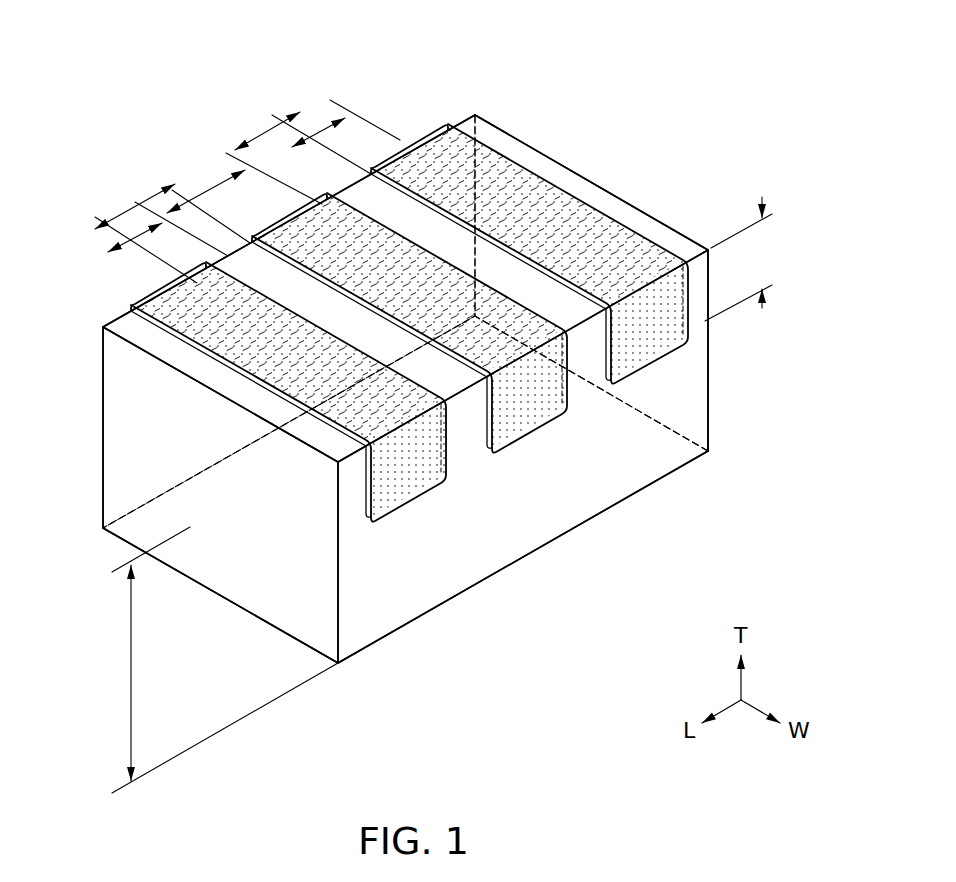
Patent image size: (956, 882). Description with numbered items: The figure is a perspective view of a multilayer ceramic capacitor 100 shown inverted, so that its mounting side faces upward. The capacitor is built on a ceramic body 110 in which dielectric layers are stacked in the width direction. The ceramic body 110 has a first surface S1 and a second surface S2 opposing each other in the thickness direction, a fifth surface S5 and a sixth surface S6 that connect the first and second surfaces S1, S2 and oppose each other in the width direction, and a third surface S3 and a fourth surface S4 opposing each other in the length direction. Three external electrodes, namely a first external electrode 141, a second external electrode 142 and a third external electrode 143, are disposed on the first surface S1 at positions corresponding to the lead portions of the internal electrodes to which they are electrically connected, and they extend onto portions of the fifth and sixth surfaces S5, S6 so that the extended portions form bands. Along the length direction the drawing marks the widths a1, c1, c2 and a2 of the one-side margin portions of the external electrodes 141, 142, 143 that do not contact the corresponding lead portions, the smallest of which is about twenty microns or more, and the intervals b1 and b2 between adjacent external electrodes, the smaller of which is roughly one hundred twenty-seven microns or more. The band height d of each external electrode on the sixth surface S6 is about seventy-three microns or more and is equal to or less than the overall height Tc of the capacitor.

The multilayer ceramic capacitor 100 is at (212, 56).
The ceramic body 110 is at (428, 361).
The first external electrode 141 is at (407, 467).
The second external electrode 142 is at (627, 343).
The third external electrode 143 is at (528, 398).
The first surface S1 is at (513, 147).
The second surface S2 is at (363, 626).
The third surface S3 is at (147, 529).
The fourth surface S4 is at (690, 378).
The fifth surface S5 is at (128, 424).
The sixth surface S6 is at (616, 478).
The width of one-side margin portion a1 is at (147, 242).
The interval between adjacent external electrodes b1 is at (168, 212).
The width of one-side margin portion c1 is at (210, 196).
The width of one-side margin portion c2 is at (247, 160).
The interval between adjacent external electrodes b2 is at (301, 142).
The width of one-side margin portion a2 is at (315, 135).
The height of band d is at (743, 259).
The overall height of the capacitor Tc is at (225, 660).